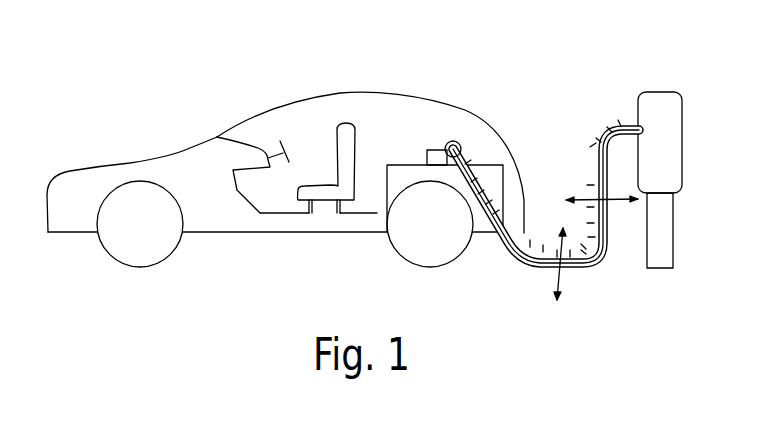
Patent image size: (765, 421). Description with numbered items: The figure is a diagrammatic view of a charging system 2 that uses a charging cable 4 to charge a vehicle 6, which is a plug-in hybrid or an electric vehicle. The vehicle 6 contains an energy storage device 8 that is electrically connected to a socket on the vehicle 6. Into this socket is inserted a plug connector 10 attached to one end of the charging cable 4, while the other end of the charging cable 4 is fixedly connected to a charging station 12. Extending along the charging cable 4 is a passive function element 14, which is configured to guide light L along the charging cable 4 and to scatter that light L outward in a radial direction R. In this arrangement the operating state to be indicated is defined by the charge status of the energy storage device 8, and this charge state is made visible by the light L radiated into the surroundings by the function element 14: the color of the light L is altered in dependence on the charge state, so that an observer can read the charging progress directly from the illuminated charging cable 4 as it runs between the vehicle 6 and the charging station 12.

The charging system 2 is at (528, 84).
The charging cable 4 is at (612, 128).
The vehicle 6 is at (93, 166).
The energy storage device 8 is at (413, 163).
The plug connector 10 is at (454, 141).
The charging station 12 is at (650, 91).
The passive function element 14 is at (596, 162).
The light L is at (528, 268).
The radial direction R is at (633, 204).